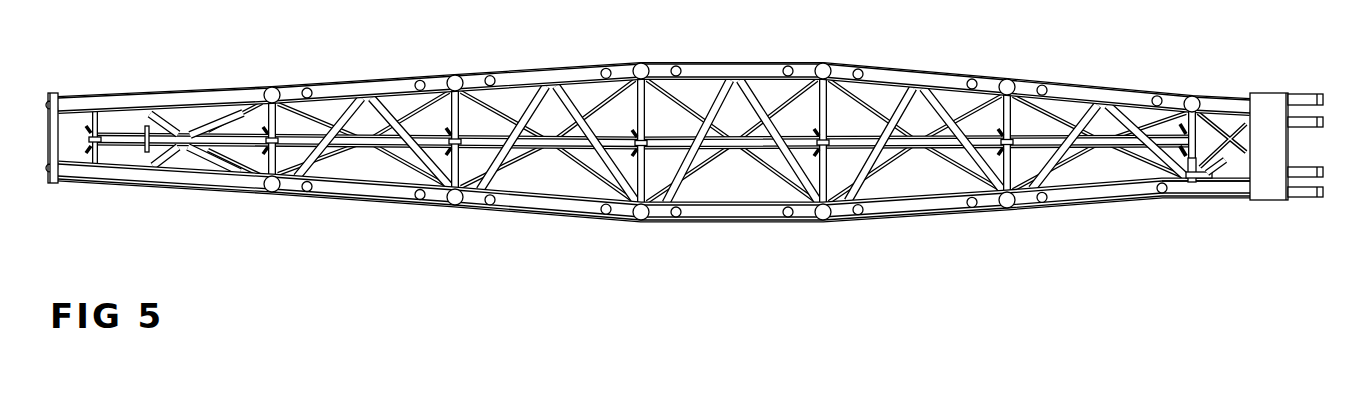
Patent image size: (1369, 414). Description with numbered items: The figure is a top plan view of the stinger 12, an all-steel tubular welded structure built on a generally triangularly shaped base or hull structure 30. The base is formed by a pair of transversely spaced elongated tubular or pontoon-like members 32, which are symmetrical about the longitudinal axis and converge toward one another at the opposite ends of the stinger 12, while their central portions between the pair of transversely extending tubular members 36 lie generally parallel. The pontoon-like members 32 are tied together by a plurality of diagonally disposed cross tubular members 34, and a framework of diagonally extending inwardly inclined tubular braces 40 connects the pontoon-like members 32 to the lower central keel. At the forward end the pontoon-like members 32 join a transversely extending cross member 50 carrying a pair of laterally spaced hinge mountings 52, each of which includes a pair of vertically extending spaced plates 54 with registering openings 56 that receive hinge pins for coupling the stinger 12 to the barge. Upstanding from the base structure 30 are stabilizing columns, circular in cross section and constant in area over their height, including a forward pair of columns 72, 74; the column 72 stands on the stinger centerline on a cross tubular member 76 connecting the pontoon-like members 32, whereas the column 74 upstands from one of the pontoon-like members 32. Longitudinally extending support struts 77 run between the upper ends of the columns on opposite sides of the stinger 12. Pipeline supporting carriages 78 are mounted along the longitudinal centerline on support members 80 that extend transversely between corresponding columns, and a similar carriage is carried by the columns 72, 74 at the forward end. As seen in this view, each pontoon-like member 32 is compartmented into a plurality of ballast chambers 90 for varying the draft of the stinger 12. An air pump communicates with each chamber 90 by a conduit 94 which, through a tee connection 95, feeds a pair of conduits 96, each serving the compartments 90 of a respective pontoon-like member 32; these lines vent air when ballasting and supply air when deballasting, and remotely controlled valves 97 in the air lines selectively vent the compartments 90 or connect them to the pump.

The stinger 12 is at (696, 136).
The base or hull structure 30 is at (654, 145).
The elongated tubular or pontoon-like members 32 is at (654, 155).
The diagonally disposed cross tubular members 34 is at (669, 117).
The transversely extending tubular members 36 is at (653, 107).
The diagonally extending inwardly inclined tubular braces 40 is at (487, 207).
The transversely extending cross member 50 is at (1270, 100).
The hinge mountings 52 is at (1305, 202).
The vertically extending spaced plates 54 is at (1325, 187).
The registering openings 56 is at (1323, 113).
The column 72 is at (1200, 153).
The column 74 is at (1194, 97).
The cross tubular member 76 is at (1182, 130).
The longitudinally extending support struts 77 is at (378, 80).
The pipeline supporting carriages 78 is at (262, 128).
The support members 80 is at (261, 163).
The ballast chambers 90 is at (560, 220).
The conduit 94 is at (1220, 170).
The tee connection 95 is at (1199, 190).
The conduits 96 is at (1122, 193).
The remotely controlled valves 97 is at (1037, 200).